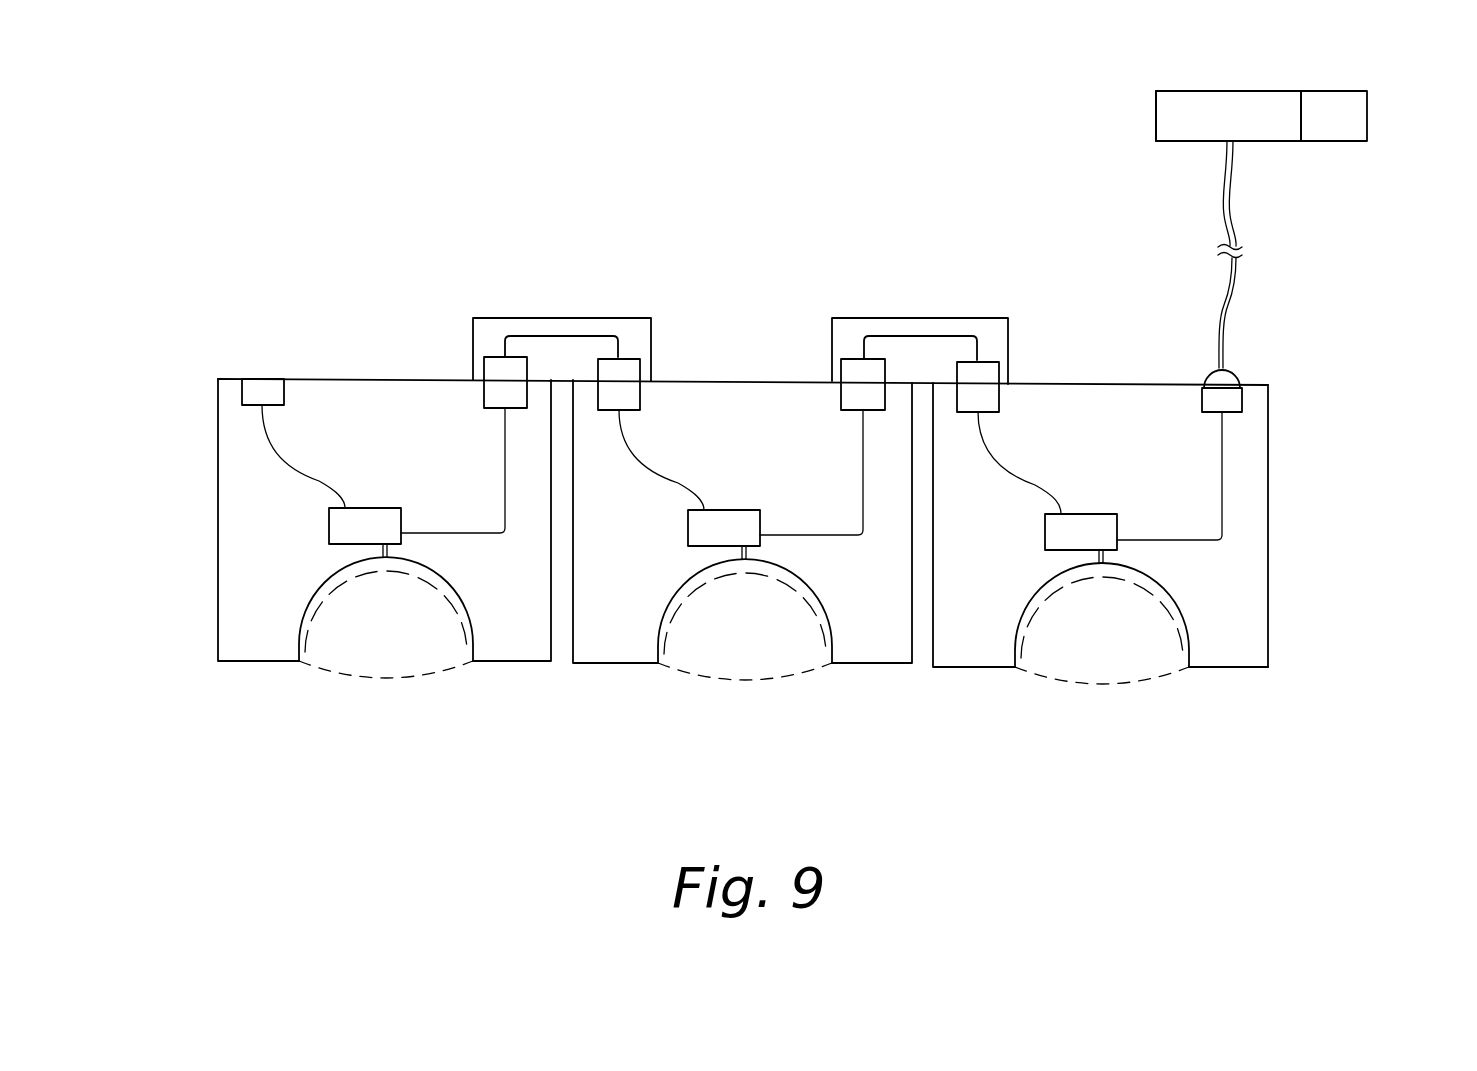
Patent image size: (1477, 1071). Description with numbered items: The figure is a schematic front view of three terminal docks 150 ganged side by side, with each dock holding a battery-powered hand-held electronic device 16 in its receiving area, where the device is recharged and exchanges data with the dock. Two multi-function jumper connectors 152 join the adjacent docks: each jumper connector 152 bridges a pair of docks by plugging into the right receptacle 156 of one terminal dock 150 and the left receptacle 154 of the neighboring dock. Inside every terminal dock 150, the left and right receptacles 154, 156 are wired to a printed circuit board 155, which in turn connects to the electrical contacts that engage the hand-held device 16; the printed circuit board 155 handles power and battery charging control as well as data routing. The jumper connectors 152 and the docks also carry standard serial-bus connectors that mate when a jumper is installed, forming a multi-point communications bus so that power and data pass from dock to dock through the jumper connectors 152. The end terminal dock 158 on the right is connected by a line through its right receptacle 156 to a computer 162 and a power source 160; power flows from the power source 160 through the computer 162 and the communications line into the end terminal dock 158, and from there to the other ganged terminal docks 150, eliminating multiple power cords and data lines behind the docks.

The hand-held electronic device 16 is at (407, 660).
The terminal dock 150 is at (240, 583).
The multi-function jumper connector 152 is at (617, 328).
The left receptacle 154 is at (256, 386).
The printed circuit board 155 is at (380, 508).
The right receptacle 156 is at (483, 390).
The end terminal dock 158 is at (1255, 517).
The power source 160 is at (1352, 120).
The computer 162 is at (1163, 103).